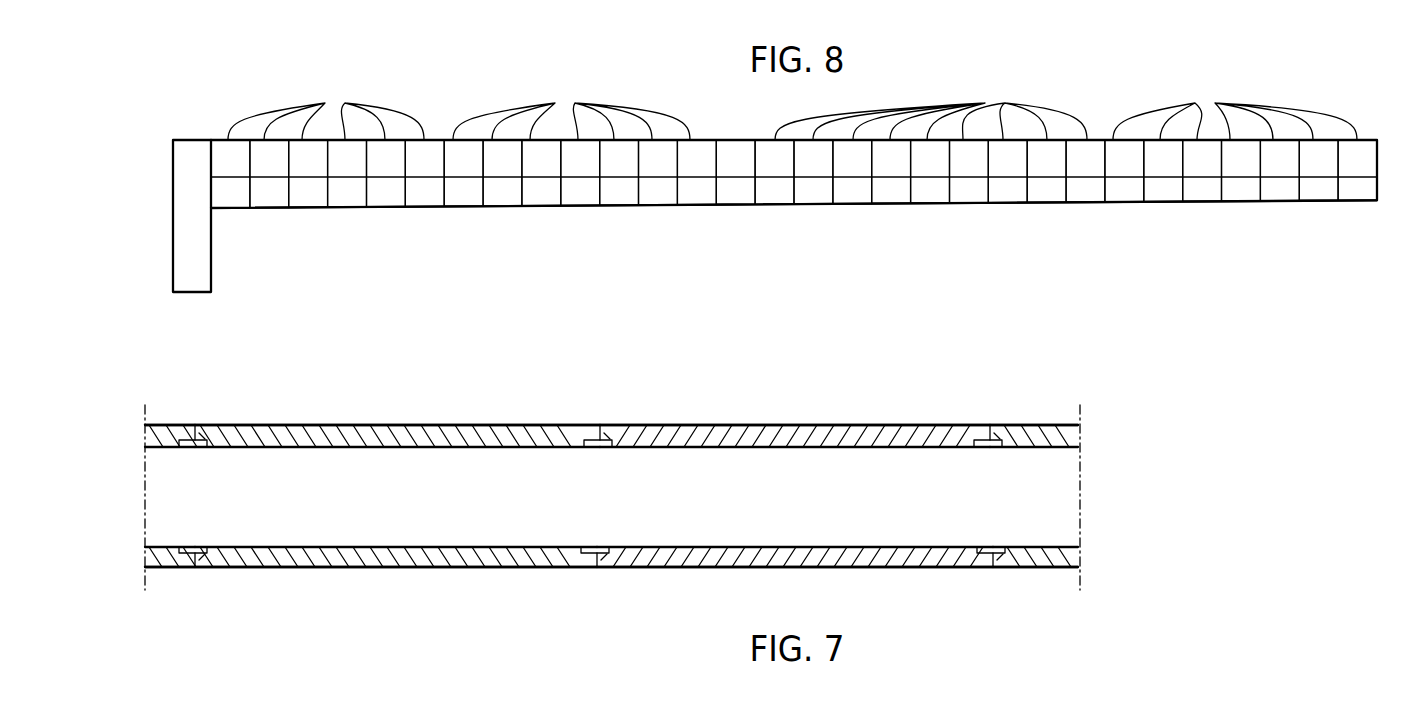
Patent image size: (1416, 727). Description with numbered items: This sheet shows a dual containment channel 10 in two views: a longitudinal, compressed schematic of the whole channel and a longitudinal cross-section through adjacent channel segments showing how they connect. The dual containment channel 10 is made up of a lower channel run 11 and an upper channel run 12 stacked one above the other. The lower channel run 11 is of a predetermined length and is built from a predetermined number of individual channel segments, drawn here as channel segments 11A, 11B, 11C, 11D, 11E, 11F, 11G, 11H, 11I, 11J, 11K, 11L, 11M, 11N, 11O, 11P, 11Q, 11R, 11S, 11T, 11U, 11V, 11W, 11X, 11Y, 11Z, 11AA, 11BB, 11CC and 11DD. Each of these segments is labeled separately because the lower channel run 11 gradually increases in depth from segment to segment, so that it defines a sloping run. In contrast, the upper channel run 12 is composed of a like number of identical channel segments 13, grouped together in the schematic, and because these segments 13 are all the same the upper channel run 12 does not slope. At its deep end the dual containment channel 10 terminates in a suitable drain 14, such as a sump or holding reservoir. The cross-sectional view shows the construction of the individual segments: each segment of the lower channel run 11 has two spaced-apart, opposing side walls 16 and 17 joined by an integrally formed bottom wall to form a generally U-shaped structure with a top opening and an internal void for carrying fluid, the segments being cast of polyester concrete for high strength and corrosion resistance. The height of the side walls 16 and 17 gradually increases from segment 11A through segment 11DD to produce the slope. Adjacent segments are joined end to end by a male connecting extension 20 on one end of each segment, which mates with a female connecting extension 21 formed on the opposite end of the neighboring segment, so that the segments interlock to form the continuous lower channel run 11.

In FIG. 8, the dual containment channel 10 is at (622, 103).
In FIG. 8, the lower channel run 11 is at (1383, 179).
In FIG. 8, the upper channel run 12 is at (1383, 142).
In FIG. 8, the channel segments 13 is at (792, 114).
In FIG. 8, the drain 14 is at (199, 152).
In FIG. 7, the side wall 16 is at (163, 430).
In FIG. 7, the side wall 17 is at (163, 562).
In FIG. 7, the male connecting extension 20 is at (187, 445).
In FIG. 7, the female connecting extension 21 is at (190, 432).
In FIG. 8, the channel segment 11A is at (1356, 194).
In FIG. 7, the channel segment 11A is at (1050, 430).
In FIG. 8, the channel segment 11B is at (1317, 194).
In FIG. 7, the channel segment 11B is at (760, 427).
In FIG. 8, the channel segment 11C is at (1278, 194).
In FIG. 7, the channel segment 11C is at (333, 423).
In FIG. 8, the channel segment 11D is at (1239, 194).
In FIG. 7, the channel segment 11D is at (173, 431).
In FIG. 8, the channel segment 11E is at (1200, 194).
In FIG. 8, the channel segment 11F is at (1161, 194).
In FIG. 8, the channel segment 11G is at (1122, 194).
In FIG. 8, the channel segment 11H is at (1084, 194).
In FIG. 8, the channel segment 11I is at (1045, 194).
In FIG. 8, the channel segment 11J is at (1006, 194).
In FIG. 8, the channel segment 11K is at (967, 194).
In FIG. 8, the channel segment 11L is at (928, 194).
In FIG. 8, the channel segment 11M is at (889, 194).
In FIG. 8, the channel segment 11N is at (850, 194).
In FIG. 8, the channel segment 11O is at (811, 194).
In FIG. 8, the channel segment 11P is at (773, 194).
In FIG. 8, the channel segment 11Q is at (734, 194).
In FIG. 8, the channel segment 11R is at (695, 194).
In FIG. 8, the channel segment 11S is at (656, 194).
In FIG. 8, the channel segment 11T is at (617, 194).
In FIG. 8, the channel segment 11U is at (578, 194).
In FIG. 8, the channel segment 11V is at (539, 194).
In FIG. 8, the channel segment 11W is at (500, 194).
In FIG. 8, the channel segment 11X is at (462, 194).
In FIG. 8, the channel segment 11Y is at (423, 194).
In FIG. 8, the channel segment 11Z is at (384, 194).
In FIG. 8, the channel segment 11AA is at (345, 194).
In FIG. 8, the channel segment 11BB is at (306, 194).
In FIG. 8, the channel segment 11CC is at (267, 194).
In FIG. 8, the channel segment 11DD is at (228, 194).